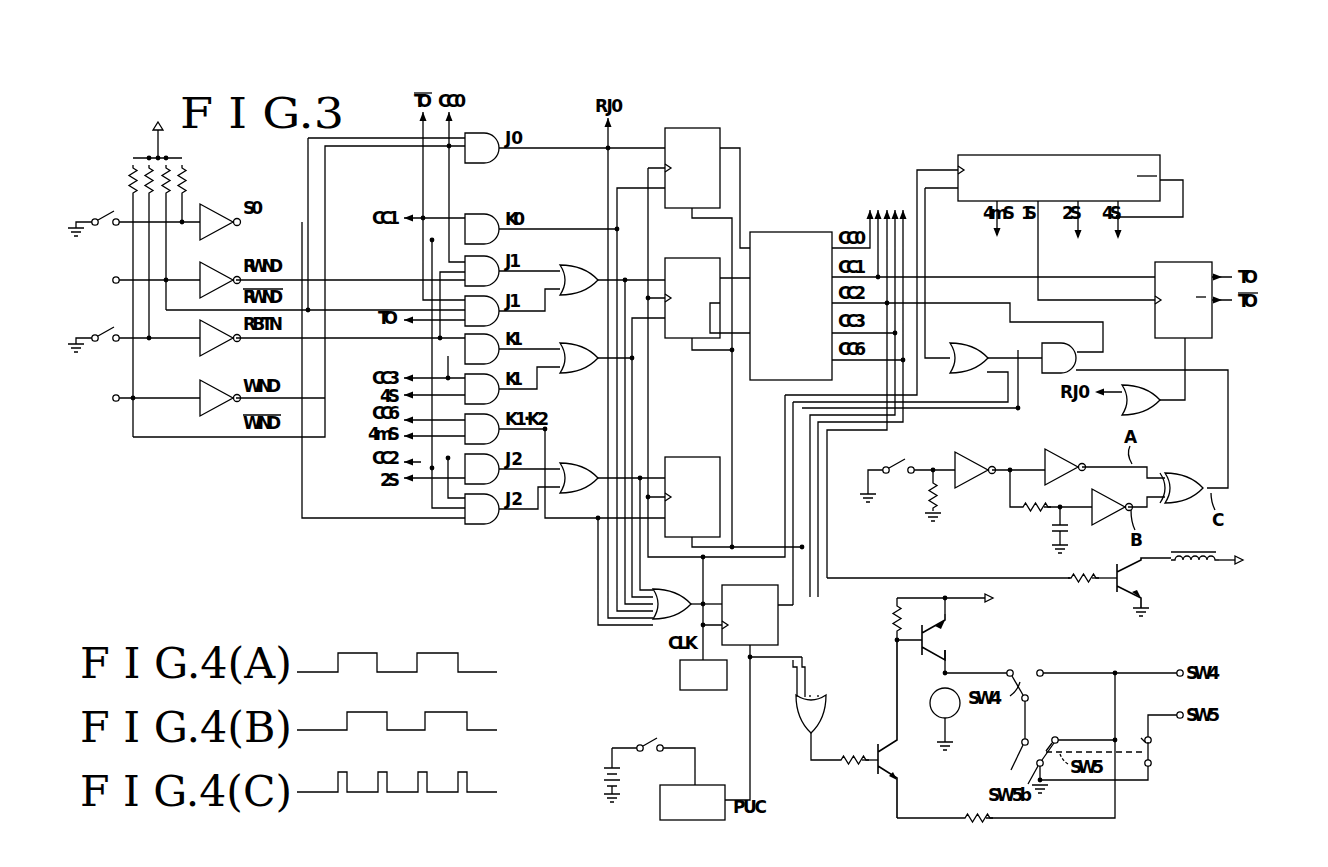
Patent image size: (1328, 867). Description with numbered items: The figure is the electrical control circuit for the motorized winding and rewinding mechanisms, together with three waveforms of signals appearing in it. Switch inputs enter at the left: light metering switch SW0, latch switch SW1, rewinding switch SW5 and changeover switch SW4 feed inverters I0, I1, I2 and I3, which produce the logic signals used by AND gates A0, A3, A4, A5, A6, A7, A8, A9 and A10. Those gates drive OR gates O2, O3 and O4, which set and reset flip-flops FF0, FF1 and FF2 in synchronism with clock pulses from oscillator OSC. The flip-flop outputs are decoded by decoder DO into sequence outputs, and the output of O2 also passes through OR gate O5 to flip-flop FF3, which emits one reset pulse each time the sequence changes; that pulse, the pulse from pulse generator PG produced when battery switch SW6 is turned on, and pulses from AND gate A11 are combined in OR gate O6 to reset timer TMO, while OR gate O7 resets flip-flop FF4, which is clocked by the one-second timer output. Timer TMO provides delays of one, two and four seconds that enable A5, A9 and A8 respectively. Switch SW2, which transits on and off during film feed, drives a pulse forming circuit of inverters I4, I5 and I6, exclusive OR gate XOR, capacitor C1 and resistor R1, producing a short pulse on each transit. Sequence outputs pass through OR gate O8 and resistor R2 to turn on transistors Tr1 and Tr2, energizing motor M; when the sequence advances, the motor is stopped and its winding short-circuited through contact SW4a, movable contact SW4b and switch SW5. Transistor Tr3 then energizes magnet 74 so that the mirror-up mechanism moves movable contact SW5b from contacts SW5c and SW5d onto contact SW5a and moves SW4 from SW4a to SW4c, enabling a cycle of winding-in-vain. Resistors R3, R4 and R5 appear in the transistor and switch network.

The light metering switch SW0 is at (134, 205).
The opening and closing switch SW1 is at (102, 330).
The opening and closing switch SW2 is at (892, 468).
The changeover switch SW4 is at (135, 399).
The changeover switch SW5 is at (135, 281).
The battery switch SW6 is at (646, 742).
The contact of switch SW4 SW4a is at (1007, 666).
The movable contact of switch SW4 SW4b is at (1022, 718).
The contact of switch SW4 SW4c is at (1042, 662).
The contact of switch SW5 SW5a is at (1013, 772).
The movable contact of switch SW5 SW5b is at (1156, 770).
The contact of switch SW5 SW5c is at (1060, 730).
The contact of switch SW5 SW5d is at (1160, 744).
The inverter I0 is at (220, 222).
The inverter I1 is at (220, 280).
The inverter I2 is at (220, 338).
The inverter I3 is at (220, 398).
The inverter I4 is at (975, 480).
The inverter I5 is at (1052, 456).
The inverter I6 is at (1117, 500).
The AND gate A0 is at (482, 148).
The AND gate A3 is at (482, 229).
The AND gate A4 is at (482, 271).
The AND gate A5 is at (482, 311).
The AND gate A6 is at (482, 349).
The AND gate A7 is at (482, 389).
The AND gate A8 is at (482, 429).
The AND gate A9 is at (482, 469).
The AND gate A10 is at (482, 509).
The AND gate A11 is at (1059, 358).
The OR gate O2 is at (612, 280).
The OR gate O3 is at (612, 345).
The OR gate O4 is at (612, 478).
The OR gate O5 is at (687, 604).
The OR gate O6 is at (969, 358).
The OR gate O7 is at (1141, 400).
The OR gate O8 is at (811, 714).
The flip-flop FF0 is at (682, 124).
The flip-flop FF1 is at (682, 258).
The flip-flop FF2 is at (682, 456).
The flip-flop FF3 is at (730, 596).
The flip-flop FF4 is at (1198, 258).
The decoder DO is at (814, 229).
The timer TMO is at (1116, 155).
The oscillator OSC is at (703, 675).
The pulse generator PG is at (692, 802).
The exclusive OR gate XOR is at (1188, 468).
The transistor Tr1 is at (892, 760).
The transistor Tr2 is at (941, 638).
The transistor Tr3 is at (1148, 576).
The resistor R1 is at (1035, 496).
The resistor R2 is at (853, 748).
The resistor R3 is at (885, 618).
The resistor R4 is at (977, 806).
The resistor R5 is at (1083, 566).
The capacitor C1 is at (1051, 530).
The magnet 74 is at (1184, 550).
The motor M is at (945, 703).